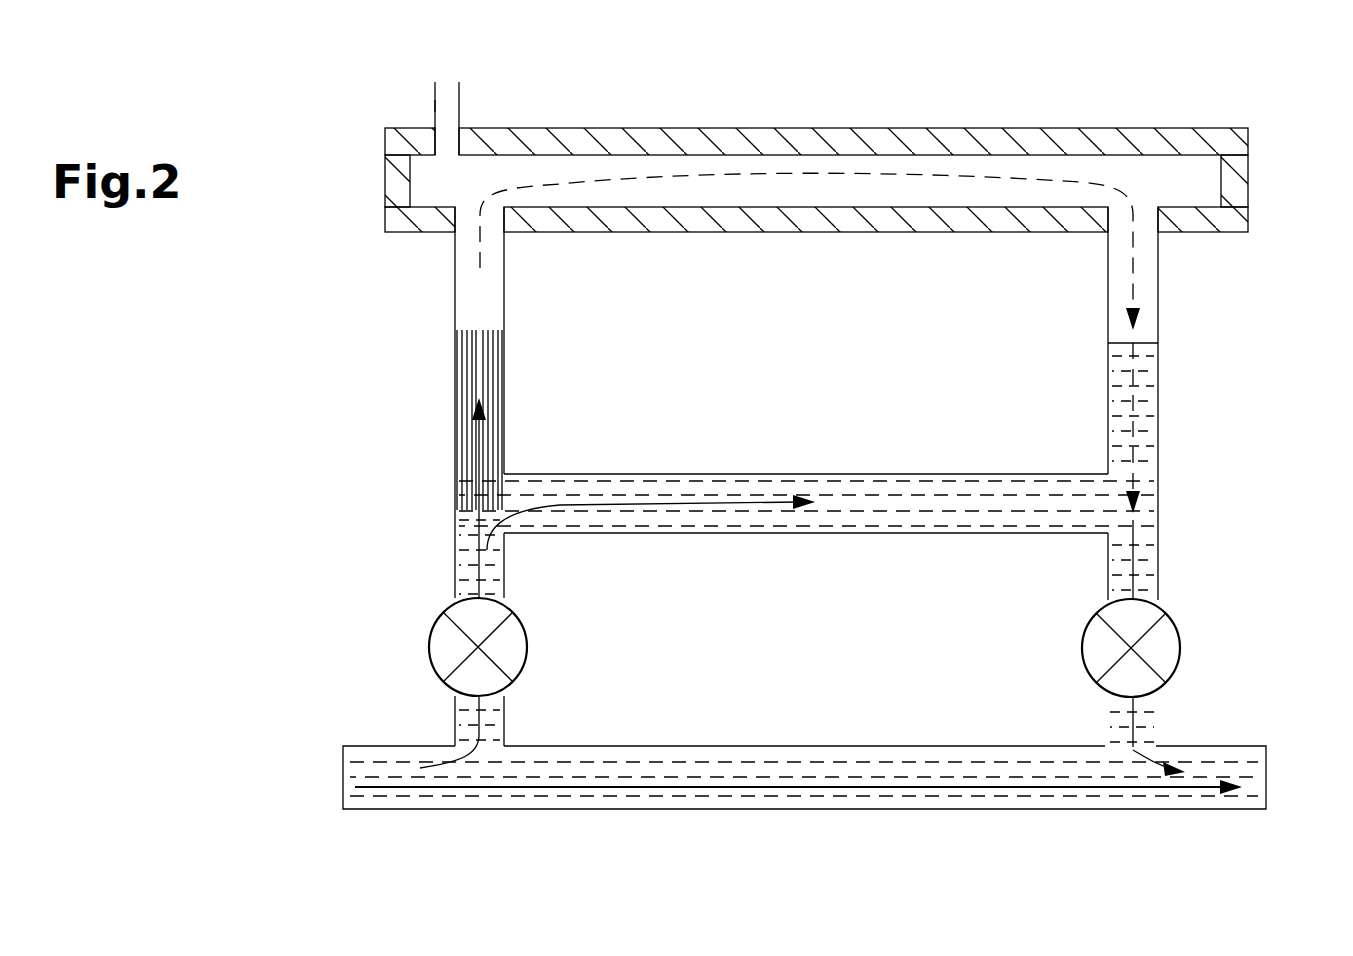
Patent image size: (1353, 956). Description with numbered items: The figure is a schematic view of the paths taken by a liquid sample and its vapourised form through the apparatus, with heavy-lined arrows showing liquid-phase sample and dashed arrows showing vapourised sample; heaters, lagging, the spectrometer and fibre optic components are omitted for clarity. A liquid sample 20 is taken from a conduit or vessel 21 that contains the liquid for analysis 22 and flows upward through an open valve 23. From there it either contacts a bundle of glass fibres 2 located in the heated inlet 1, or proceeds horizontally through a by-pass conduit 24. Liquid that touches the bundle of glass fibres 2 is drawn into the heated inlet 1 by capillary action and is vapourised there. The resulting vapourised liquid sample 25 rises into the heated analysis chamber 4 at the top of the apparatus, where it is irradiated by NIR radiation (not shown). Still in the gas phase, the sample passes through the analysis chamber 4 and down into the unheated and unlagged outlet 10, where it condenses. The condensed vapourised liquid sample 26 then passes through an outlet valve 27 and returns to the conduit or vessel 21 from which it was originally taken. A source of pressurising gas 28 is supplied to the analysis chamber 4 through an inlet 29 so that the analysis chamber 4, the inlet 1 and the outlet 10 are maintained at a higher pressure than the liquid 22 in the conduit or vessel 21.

The inlet 1 is at (425, 403).
The bundle of glass fibres 2 is at (478, 368).
The analysis chamber 4 is at (767, 110).
The outlet 10 is at (1085, 302).
The liquid sample 20 is at (475, 706).
The conduit or vessel 21 is at (797, 748).
The liquid for analysis 22 is at (935, 765).
The open valve 23 is at (440, 645).
The by-pass conduit 24 is at (712, 535).
The vapourised liquid sample 25 is at (990, 178).
The condensed vapourised liquid sample 26 is at (1135, 403).
The outlet valve 27 is at (1162, 648).
The source of pressurising gas 28 is at (447, 98).
The inlet 29 is at (434, 105).